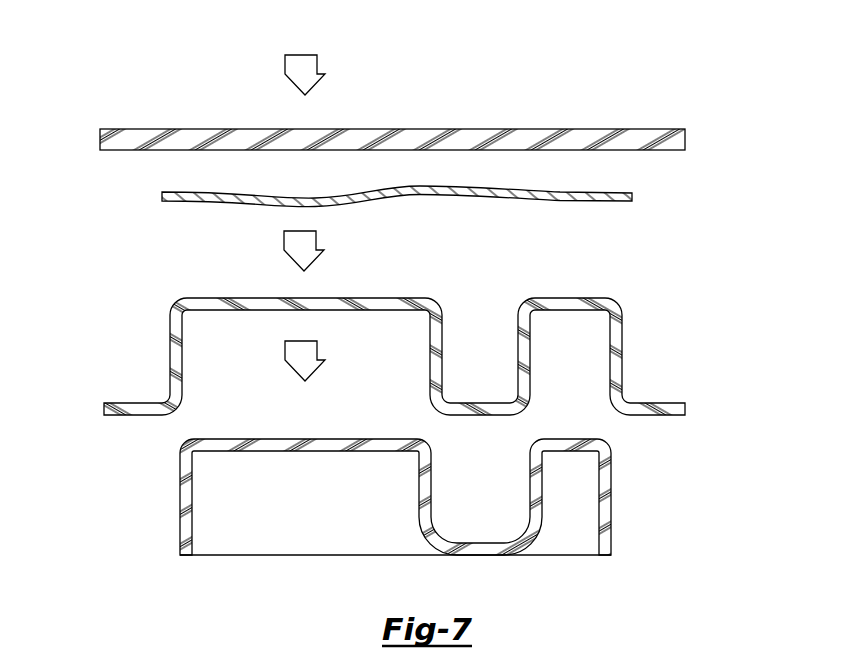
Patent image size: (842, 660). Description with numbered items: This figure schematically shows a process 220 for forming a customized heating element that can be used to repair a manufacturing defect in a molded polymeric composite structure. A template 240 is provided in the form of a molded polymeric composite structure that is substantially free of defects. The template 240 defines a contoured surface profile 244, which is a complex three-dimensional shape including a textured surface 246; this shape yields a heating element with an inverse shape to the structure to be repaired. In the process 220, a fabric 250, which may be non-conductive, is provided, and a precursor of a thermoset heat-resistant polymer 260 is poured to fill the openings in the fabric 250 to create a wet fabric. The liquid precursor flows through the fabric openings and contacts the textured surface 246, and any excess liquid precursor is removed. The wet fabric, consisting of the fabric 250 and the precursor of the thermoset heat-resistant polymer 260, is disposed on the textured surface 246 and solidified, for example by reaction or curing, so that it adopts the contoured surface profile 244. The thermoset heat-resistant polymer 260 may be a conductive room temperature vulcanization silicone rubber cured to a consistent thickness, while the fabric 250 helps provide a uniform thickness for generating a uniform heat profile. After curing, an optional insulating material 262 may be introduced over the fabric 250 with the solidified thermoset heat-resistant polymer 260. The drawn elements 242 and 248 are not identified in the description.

The process 220 is at (142, 100).
The insulating material 262 is at (686, 140).
The thermoset heat-resistant polymer 260 is at (633, 196).
The fabric 250 is at (686, 408).
The template 240 is at (612, 547).
The cavity 242 is at (263, 525).
The contoured surface profile 244 is at (487, 528).
The textured surface 246 is at (267, 437).
The side wall 248 is at (455, 477).